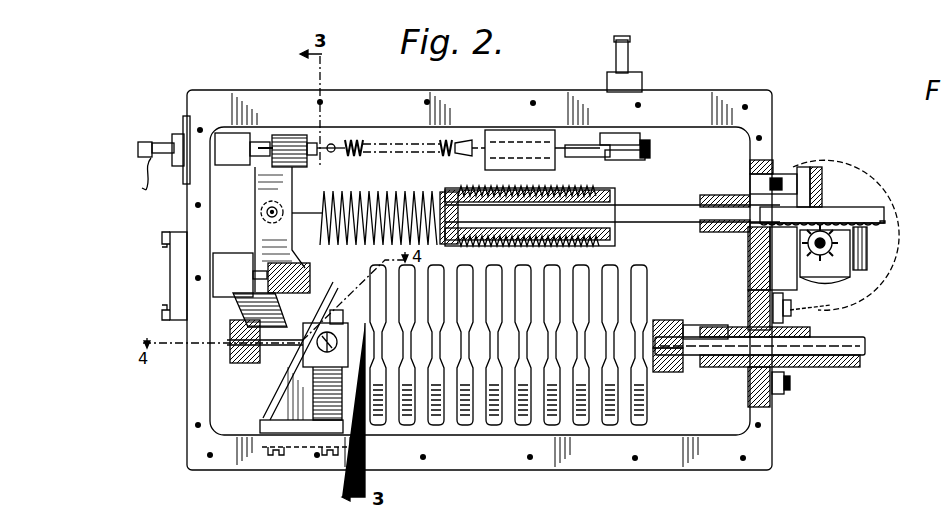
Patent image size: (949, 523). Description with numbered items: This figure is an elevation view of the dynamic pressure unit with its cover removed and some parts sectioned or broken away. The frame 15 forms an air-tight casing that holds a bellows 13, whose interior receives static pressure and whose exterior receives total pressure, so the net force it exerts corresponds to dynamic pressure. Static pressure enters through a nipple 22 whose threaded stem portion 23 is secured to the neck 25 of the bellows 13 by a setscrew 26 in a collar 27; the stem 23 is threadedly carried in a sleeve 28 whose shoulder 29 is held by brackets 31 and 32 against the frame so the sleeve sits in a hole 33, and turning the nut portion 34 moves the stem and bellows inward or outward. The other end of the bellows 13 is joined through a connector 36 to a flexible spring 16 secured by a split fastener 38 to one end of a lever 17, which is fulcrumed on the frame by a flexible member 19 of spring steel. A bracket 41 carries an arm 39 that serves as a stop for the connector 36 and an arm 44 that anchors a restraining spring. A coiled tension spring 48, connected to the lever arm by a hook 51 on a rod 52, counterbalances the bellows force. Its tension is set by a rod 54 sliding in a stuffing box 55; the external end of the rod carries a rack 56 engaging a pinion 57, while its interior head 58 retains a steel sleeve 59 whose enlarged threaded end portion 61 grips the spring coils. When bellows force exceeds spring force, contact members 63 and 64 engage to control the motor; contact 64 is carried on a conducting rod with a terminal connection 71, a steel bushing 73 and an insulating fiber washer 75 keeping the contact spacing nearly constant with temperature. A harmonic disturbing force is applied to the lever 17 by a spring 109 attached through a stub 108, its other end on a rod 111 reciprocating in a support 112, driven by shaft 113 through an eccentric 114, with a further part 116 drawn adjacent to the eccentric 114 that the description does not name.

The bellows 13 is at (648, 402).
The frame 15 is at (598, 459).
The flexible spring 16 is at (290, 345).
The lever 17 is at (308, 270).
The flexible member 19 is at (262, 266).
The nipple 22 is at (855, 357).
The threaded stem portion 23 is at (818, 360).
The neck 25 is at (670, 358).
The setscrew 26 is at (664, 320).
The collar 27 is at (688, 322).
The sleeve 28 is at (792, 315).
The shoulder 29 is at (791, 310).
The bracket 31 is at (786, 390).
The bracket 32 is at (783, 298).
The hole 33 is at (746, 372).
The nut portion 34 is at (812, 340).
The connector 36 is at (345, 320).
The split fastener 38 is at (337, 342).
The arm 39 is at (333, 311).
The bracket 41 is at (325, 395).
The arm 44 is at (300, 340).
The coiled tension spring 48 is at (420, 190).
The hook 51 is at (262, 205).
The rod 52 is at (266, 213).
The rod 54 is at (712, 196).
The stuffing box 55 is at (720, 194).
The rack 56 is at (852, 215).
The pinion 57 is at (838, 246).
The head 58 is at (452, 236).
The steel sleeve 59 is at (525, 240).
The enlarged threaded end portion 61 is at (615, 195).
The contact member 63 is at (284, 135).
The contact member 64 is at (268, 150).
The terminal connection 71 is at (157, 166).
The steel bushing 73 is at (183, 118).
The insulating fiber washer 75 is at (175, 134).
The stub 108 is at (325, 154).
The spring 109 is at (356, 140).
The rod 111 is at (470, 158).
The support 112 is at (515, 130).
The shaft 113 is at (640, 58).
The eccentric 114 is at (651, 150).
The contact rod 116 is at (600, 158).